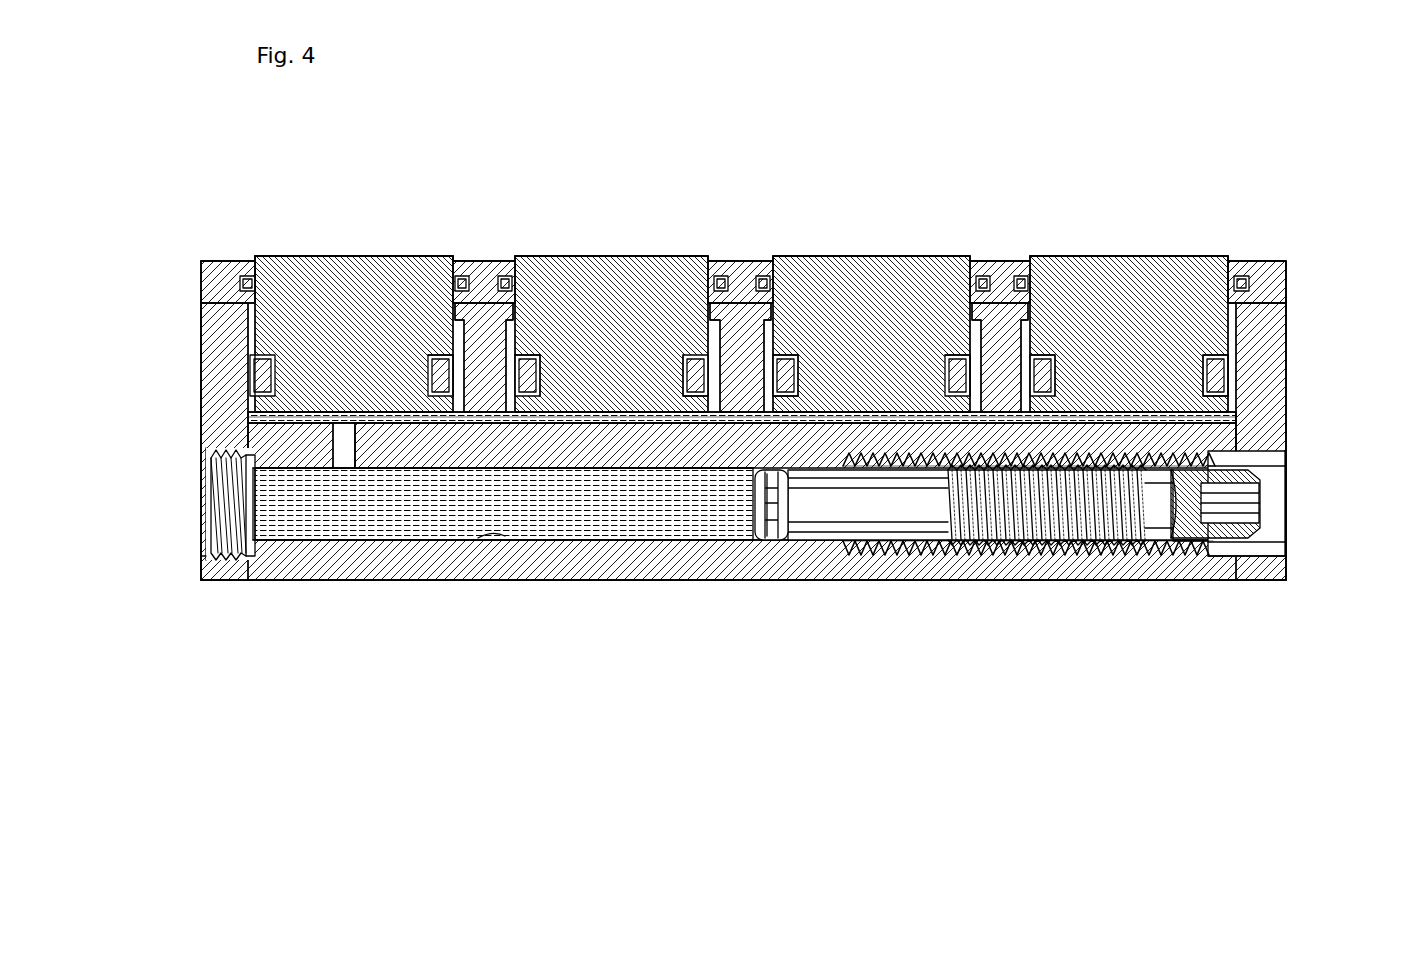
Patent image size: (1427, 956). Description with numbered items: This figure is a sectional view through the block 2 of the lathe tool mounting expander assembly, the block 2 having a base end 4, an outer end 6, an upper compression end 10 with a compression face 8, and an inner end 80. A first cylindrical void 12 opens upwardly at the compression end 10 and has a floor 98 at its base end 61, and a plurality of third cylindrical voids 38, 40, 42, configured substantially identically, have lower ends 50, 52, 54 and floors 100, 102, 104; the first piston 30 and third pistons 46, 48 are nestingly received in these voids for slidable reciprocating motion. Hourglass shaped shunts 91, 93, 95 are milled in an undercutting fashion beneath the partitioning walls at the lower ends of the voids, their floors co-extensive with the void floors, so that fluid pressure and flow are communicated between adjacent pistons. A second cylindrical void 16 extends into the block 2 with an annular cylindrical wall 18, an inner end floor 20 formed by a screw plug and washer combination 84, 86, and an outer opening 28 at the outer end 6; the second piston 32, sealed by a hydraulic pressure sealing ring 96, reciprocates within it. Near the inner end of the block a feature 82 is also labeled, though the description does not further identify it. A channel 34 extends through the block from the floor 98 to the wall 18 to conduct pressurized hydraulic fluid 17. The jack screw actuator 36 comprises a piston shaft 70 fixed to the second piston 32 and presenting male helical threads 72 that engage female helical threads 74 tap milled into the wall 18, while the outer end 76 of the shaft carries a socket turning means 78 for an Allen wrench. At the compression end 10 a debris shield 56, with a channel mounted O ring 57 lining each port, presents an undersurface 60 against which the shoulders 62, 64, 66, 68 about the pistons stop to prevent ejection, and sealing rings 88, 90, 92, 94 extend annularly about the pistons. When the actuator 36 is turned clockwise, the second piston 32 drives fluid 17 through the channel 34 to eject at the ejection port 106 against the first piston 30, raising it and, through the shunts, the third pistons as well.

The block 2 is at (403, 560).
The base end 4 is at (1068, 572).
The outer end 6 is at (1280, 392).
The compression face 8 is at (1238, 253).
The upper compression end 10 is at (193, 318).
The first cylindrical void 12 is at (418, 258).
The second cylindrical void 16 is at (515, 505).
The pressurized hydraulic fluid 17 is at (615, 508).
The annular cylindrical wall 18 is at (510, 500).
The inner end floor 20 is at (197, 520).
The outer opening 28 is at (1252, 462).
The first piston 30 is at (297, 413).
The second piston 32 is at (750, 497).
The channel 34 is at (352, 442).
The jack screw actuator 36 is at (1037, 513).
The third cylindrical void 38 is at (547, 262).
The third cylindrical void 40 is at (795, 305).
The third cylindrical void 42 is at (1183, 253).
The third piston 46 is at (827, 413).
The third piston 48 is at (1107, 270).
The lower end 50 is at (563, 413).
The lower end 52 is at (862, 413).
The lower end 54 is at (1097, 413).
The debris shield 56 is at (205, 253).
The O ring 57 is at (242, 253).
The undersurface 60 is at (238, 318).
The base end 61 is at (313, 253).
The shoulder 62 is at (423, 317).
The shoulder 64 is at (665, 345).
The shoulder 66 is at (940, 317).
The shoulder 68 is at (1022, 330).
The piston shaft 70 is at (852, 510).
The male helical threads 72 is at (953, 510).
The female helical threads 74 is at (1183, 552).
The outer end 76 is at (1213, 548).
The turning means 78 is at (1245, 515).
The inner end 80 is at (205, 517).
The corner 82 is at (197, 553).
The screw plug 84 is at (250, 485).
The washer 86 is at (247, 530).
The hydraulic pressure sealing ring 88 is at (298, 253).
The hydraulic pressure sealing ring 90 is at (550, 323).
The shunt 91 is at (475, 300).
The hydraulic pressure sealing ring 92 is at (785, 350).
The shunt 93 is at (735, 310).
The hydraulic pressure sealing ring 94 is at (1200, 365).
The shunt 95 is at (983, 413).
The hydraulic pressure sealing ring 96 is at (753, 527).
The floor 98 is at (375, 413).
The floor 100 is at (650, 413).
The floor 102 is at (887, 413).
The floor 104 is at (1143, 413).
The ejection port 106 is at (340, 418).